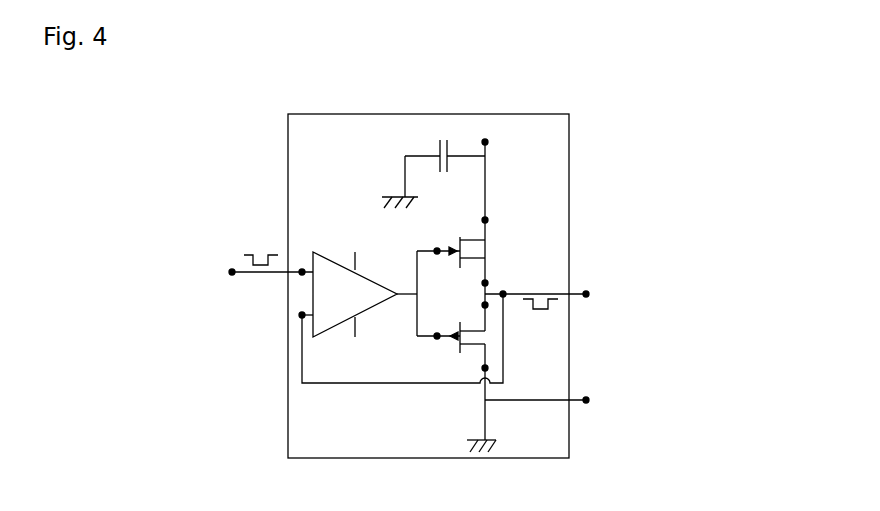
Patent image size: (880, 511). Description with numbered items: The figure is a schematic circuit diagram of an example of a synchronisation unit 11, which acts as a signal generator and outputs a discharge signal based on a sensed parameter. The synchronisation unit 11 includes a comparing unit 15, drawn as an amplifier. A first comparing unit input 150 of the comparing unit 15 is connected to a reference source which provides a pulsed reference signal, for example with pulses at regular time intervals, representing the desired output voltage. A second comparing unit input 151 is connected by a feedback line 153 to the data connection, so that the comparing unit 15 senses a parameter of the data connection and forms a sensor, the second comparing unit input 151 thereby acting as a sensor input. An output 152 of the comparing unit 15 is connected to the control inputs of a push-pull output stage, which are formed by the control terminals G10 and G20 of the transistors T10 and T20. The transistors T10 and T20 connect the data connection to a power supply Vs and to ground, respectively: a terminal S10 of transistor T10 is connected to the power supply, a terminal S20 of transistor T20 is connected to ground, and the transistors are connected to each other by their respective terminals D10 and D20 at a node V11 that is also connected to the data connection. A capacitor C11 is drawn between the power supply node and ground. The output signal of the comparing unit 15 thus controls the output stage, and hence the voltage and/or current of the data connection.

The synchronisation unit 11 is at (320, 140).
The comparing unit 15 is at (355, 300).
The first comparing unit input 150 is at (298, 274).
The second comparing unit input 151 is at (300, 316).
The output of the comparing unit 152 is at (409, 296).
The feedback line 153 is at (300, 384).
The capacitor C11 is at (443, 165).
The control terminal of transistor T10 G10 is at (437, 250).
The control terminal of transistor T20 G20 is at (437, 338).
The transistor T10 is at (470, 257).
The transistor T20 is at (470, 332).
The terminal of transistor T10 S10 is at (485, 220).
The terminal of transistor T20 S20 is at (485, 368).
The terminal of transistor T10 D10 is at (485, 283).
The terminal of transistor T20 D20 is at (485, 305).
The node V11 is at (503, 294).